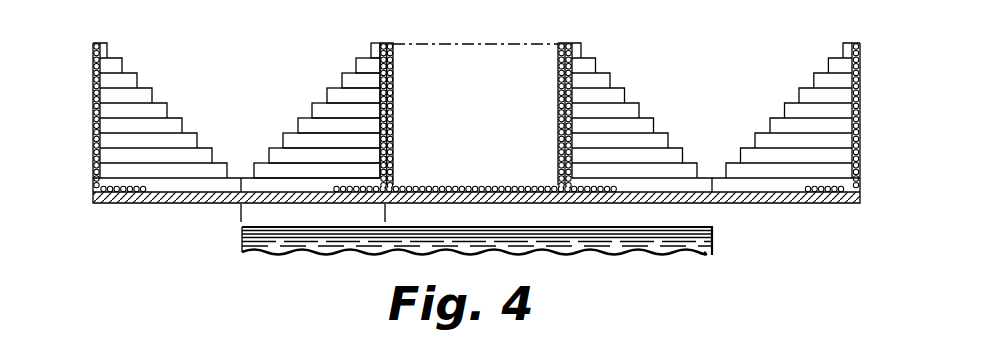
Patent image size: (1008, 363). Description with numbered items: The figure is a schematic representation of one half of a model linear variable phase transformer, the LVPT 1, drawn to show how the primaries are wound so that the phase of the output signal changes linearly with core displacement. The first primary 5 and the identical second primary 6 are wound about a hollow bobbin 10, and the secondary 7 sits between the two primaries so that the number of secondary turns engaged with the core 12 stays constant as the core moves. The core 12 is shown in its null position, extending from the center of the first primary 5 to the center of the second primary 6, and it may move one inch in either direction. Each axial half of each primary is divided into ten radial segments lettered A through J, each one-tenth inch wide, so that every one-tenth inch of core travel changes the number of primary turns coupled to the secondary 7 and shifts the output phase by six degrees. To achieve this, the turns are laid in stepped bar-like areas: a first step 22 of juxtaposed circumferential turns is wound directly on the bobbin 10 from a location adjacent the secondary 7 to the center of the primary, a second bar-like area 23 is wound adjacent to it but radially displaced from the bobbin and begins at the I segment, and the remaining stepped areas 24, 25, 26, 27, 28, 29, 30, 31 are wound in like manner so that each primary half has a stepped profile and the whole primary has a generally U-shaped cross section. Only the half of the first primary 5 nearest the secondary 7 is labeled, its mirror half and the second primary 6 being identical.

The LVPT 1 is at (446, 155).
The first primary 5 is at (306, 97).
The second primary 6 is at (727, 70).
The secondary 7 is at (476, 41).
The hollow bobbin 10 is at (116, 204).
The core 12 is at (242, 238).
The first bar-like area or step 22 is at (240, 186).
The second bar-like area 23 is at (253, 166).
The stepped area 24 is at (268, 151).
The stepped area 25 is at (282, 136).
The stepped area 26 is at (297, 121).
The stepped area 27 is at (312, 106).
The stepped area 28 is at (327, 91).
The stepped area 29 is at (341, 76).
The stepped area 30 is at (356, 61).
The stepped area 31 is at (371, 46).